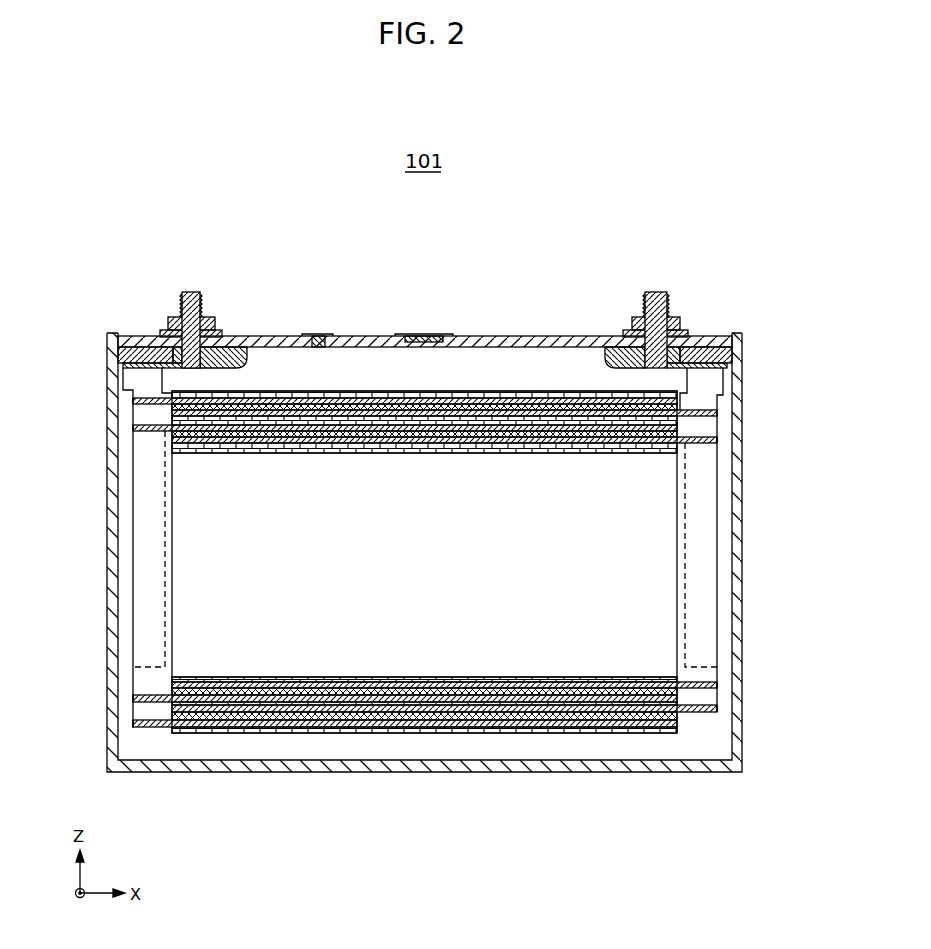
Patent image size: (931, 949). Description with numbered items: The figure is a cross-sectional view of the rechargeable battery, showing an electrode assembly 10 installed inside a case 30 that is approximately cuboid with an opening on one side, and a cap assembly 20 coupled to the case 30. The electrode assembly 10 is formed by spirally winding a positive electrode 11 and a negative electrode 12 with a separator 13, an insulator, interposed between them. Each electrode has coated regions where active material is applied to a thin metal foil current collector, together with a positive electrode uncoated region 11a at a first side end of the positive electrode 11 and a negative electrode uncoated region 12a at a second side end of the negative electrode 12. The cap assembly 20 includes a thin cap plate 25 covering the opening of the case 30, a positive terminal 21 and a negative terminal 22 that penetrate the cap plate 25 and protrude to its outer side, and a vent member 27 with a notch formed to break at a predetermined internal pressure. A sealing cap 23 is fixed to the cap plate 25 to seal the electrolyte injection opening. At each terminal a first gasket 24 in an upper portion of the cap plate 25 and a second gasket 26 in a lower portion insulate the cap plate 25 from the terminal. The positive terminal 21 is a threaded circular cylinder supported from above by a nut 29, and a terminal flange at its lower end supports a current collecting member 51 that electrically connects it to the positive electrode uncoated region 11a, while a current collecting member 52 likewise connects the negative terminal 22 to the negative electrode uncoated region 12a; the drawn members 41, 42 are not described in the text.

The electrode assembly 10 is at (432, 613).
The positive electrode 11 is at (263, 702).
The positive electrode uncoated region 11a is at (157, 728).
The negative electrode 12 is at (328, 688).
The negative electrode uncoated region 12a is at (700, 712).
The separator 13 is at (438, 703).
The cap assembly 20 is at (424, 302).
The positive terminal 21 is at (190, 292).
The negative terminal 22 is at (655, 292).
The sealing cap 23 is at (318, 336).
The first gasket 24 is at (163, 333).
The cap plate 25 is at (543, 343).
The second gasket 26 is at (168, 350).
The vent member 27 is at (420, 336).
The nut 29 is at (172, 318).
The case 30 is at (596, 772).
The first current collecting tab 41 is at (118, 355).
The second current collecting tab 42 is at (735, 355).
The current collecting member 51 is at (122, 382).
The current collecting member 52 is at (728, 382).